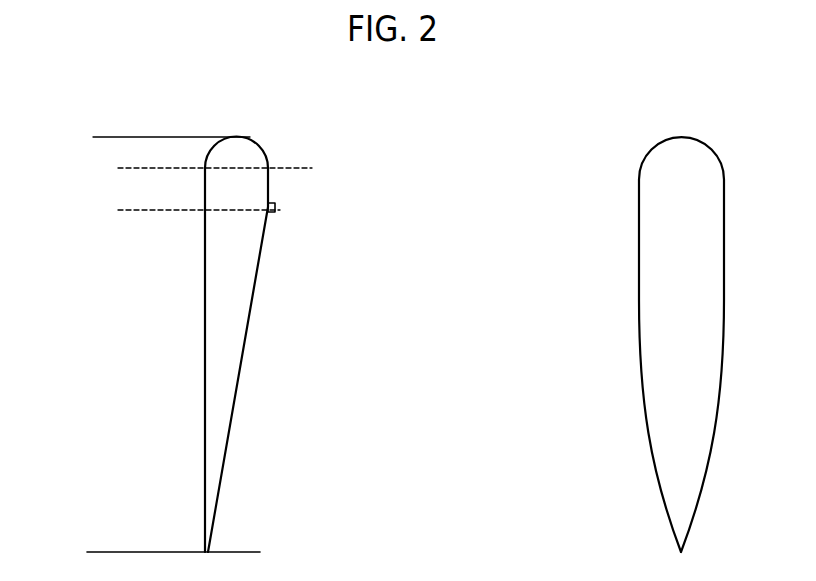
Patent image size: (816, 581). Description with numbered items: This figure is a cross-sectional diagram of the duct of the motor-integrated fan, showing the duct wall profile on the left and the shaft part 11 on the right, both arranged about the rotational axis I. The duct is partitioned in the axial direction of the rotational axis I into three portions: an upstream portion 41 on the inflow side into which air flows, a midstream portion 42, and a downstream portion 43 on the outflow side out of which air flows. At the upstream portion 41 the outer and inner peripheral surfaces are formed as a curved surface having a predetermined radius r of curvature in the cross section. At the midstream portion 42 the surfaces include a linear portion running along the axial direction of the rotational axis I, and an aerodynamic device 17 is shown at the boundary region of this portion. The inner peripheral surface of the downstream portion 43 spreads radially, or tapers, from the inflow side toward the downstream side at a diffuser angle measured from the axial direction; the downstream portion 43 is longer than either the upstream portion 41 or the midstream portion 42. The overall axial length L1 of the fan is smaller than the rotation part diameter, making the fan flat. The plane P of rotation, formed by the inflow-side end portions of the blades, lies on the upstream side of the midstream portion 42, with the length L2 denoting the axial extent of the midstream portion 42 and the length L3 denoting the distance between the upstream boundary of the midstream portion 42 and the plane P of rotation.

The shaft part 11 is at (628, 422).
The aerodynamic device 17 is at (276, 208).
The upstream portion 41 is at (126, 137).
The midstream portion 42 is at (126, 168).
The downstream portion 43 is at (126, 210).
The length of the motor-integrated fan L1 is at (101, 137).
The length of the midstream portion L2 is at (255, 168).
The length between the upstream boundary of the midstream portion and the plane of r L3 is at (305, 200).
The plane of rotation P is at (728, 183).
The radius of curvature r is at (236, 168).
The rotational axis I is at (681, 570).